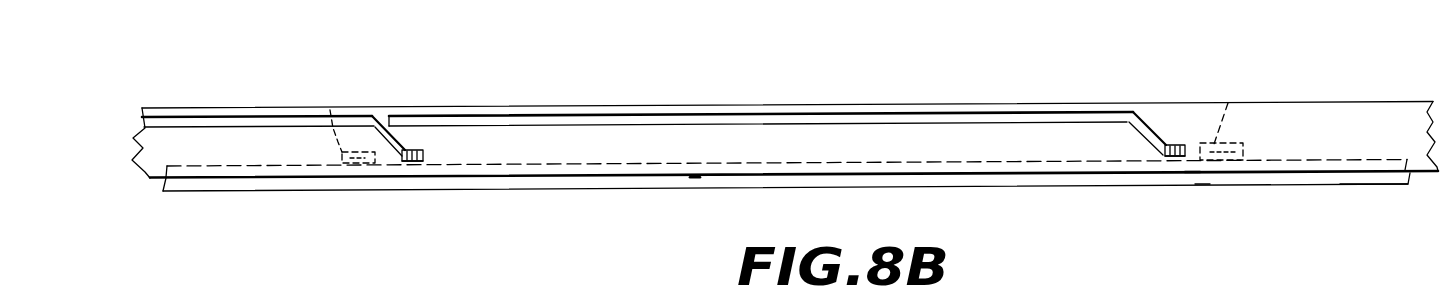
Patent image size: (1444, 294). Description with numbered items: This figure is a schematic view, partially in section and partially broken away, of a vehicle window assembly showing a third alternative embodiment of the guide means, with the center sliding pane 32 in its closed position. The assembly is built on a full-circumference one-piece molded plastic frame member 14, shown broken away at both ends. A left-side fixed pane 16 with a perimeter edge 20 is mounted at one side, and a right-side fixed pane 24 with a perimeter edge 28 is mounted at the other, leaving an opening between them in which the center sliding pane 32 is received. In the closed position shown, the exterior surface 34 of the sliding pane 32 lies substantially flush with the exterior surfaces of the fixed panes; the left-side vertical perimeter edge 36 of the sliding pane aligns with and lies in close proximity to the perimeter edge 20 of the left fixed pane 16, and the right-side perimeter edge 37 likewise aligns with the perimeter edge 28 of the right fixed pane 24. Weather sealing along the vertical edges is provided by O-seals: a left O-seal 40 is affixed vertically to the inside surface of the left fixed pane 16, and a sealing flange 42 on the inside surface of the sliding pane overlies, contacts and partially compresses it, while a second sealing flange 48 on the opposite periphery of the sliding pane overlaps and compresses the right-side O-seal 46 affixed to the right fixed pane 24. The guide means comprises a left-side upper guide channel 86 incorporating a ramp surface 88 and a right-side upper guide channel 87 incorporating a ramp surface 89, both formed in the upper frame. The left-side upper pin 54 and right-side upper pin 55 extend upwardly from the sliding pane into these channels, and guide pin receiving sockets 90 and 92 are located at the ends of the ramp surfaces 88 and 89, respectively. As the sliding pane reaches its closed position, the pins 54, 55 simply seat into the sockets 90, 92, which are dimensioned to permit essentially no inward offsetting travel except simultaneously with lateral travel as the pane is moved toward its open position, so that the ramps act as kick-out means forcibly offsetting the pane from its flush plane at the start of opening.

The frame member 14 is at (1415, 102).
The left-side fixed pane 16 is at (161, 192).
The perimeter edge 20 is at (377, 183).
The right-side fixed pane 24 is at (1345, 184).
The perimeter edge 28 is at (1200, 184).
The center sliding pane 32 is at (695, 182).
The exterior surface 34 is at (565, 192).
The left-side vertical perimeter edge 36 is at (387, 183).
The right-side perimeter edge 37 is at (1188, 158).
The left O-seal 40 is at (315, 180).
The sealing flange 42 is at (330, 108).
The right-side O-seal 46 is at (1247, 148).
The sealing flange 48 is at (1228, 100).
The upper pin 54 is at (413, 163).
The upper pin 55 is at (1165, 157).
The left-side upper guide channel 86 is at (197, 121).
The right-side upper guide channel 87 is at (568, 117).
The ramp surface 88 is at (386, 116).
The ramp surface 89 is at (1143, 112).
The guide pin receiving socket 90 is at (416, 150).
The guide pin receiving socket 92 is at (1177, 145).